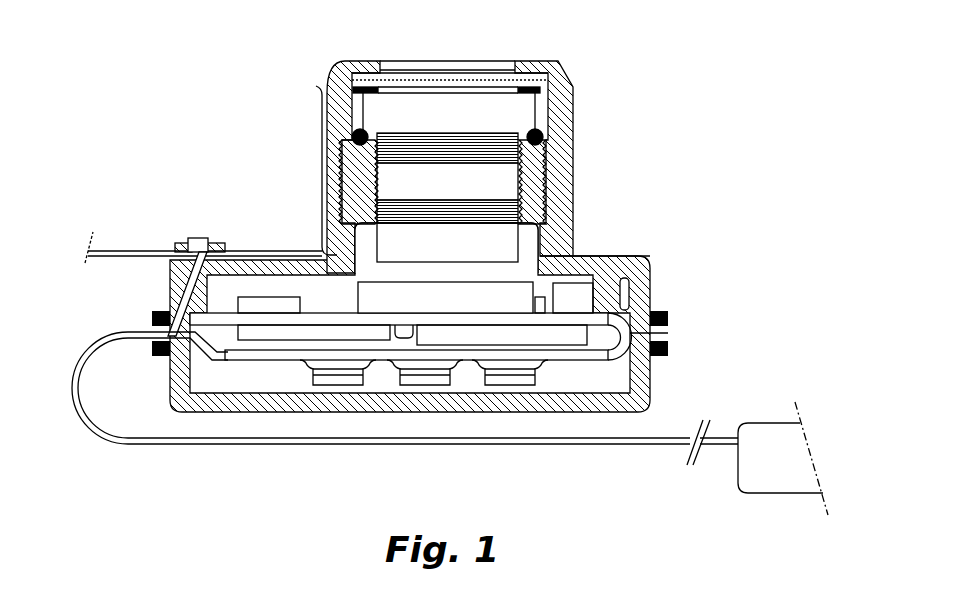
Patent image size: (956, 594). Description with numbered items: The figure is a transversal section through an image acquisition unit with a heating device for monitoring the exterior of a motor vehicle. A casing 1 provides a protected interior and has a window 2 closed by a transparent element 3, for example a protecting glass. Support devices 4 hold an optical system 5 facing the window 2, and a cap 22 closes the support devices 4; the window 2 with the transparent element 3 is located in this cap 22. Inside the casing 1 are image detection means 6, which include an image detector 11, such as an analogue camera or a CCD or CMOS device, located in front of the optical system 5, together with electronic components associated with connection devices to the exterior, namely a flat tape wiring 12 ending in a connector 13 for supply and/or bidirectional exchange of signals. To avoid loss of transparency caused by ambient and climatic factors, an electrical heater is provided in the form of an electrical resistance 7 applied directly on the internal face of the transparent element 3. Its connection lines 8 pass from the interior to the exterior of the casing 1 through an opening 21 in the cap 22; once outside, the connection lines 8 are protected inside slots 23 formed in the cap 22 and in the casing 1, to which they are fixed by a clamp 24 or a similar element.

The casing 1 is at (617, 262).
The window 2 is at (403, 40).
The transparent element 3 is at (453, 78).
The support devices 4 is at (352, 193).
The optical system 5 is at (462, 180).
The image detection means 6 is at (322, 300).
The electrical resistance 7 is at (365, 104).
The connection lines 8 is at (135, 252).
The image detector 11 is at (475, 298).
The flat tape wiring 12 is at (250, 442).
The connector 13 is at (748, 467).
The opening 21 is at (355, 88).
The cap 22 is at (567, 118).
The slots 23 is at (316, 86).
The clamp 24 is at (203, 246).